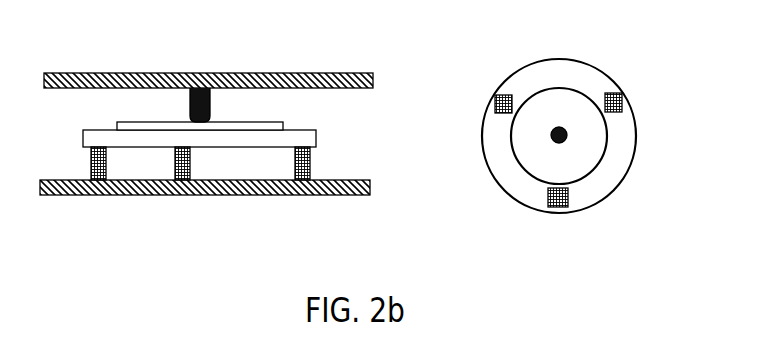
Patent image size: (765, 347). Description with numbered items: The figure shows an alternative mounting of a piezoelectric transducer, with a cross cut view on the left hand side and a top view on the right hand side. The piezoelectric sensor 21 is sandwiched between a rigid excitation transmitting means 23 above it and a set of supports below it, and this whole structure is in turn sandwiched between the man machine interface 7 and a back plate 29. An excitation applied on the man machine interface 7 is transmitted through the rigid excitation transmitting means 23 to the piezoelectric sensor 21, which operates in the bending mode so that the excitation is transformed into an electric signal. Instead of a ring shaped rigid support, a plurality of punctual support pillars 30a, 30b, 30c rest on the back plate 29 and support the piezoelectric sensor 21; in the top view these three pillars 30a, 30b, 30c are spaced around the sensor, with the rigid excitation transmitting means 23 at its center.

The man machine interface 7 is at (345, 73).
The piezoelectric sensor 21 is at (238, 126).
The rigid excitation transmitting means 23 is at (188, 108).
The back plate 29 is at (69, 196).
The punctual support pillar 30a is at (106, 165).
The punctual support pillar 30b is at (190, 165).
The punctual support pillar 30c is at (294, 168).